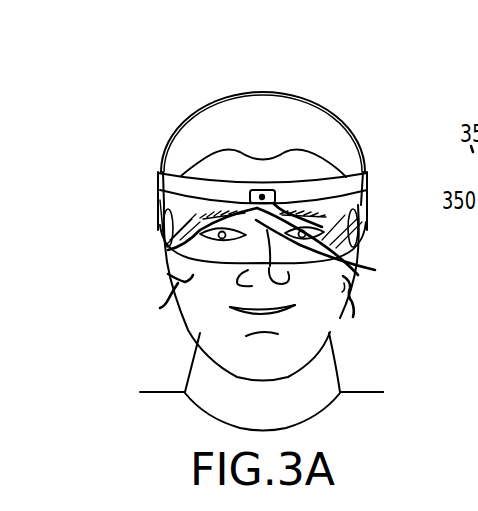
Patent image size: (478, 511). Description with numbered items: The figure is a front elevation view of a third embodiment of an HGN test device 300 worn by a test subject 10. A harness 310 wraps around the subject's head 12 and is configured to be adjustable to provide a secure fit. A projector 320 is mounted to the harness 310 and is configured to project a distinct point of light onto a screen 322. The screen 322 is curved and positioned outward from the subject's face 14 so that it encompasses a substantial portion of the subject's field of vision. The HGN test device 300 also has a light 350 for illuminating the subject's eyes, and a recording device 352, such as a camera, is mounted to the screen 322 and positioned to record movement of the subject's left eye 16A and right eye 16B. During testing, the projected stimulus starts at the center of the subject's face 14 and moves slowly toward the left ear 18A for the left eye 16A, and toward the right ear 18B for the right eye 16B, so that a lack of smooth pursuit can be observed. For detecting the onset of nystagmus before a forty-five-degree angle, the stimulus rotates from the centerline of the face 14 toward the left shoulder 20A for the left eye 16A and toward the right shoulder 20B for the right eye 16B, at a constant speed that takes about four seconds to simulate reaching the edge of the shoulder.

The HGN test device 300 is at (146, 108).
The test subject 10 is at (372, 122).
The head 12 is at (305, 116).
The face 14 is at (176, 298).
The harness 310 is at (174, 137).
The screen 322 is at (160, 200).
The projector 320 is at (358, 275).
The light 350 is at (276, 199).
The recording device 352 is at (322, 227).
The left eye 16A is at (375, 270).
The right eye 16B is at (168, 250).
The left ear 18A is at (360, 314).
The right ear 18B is at (168, 274).
The left shoulder 20A is at (380, 403).
The right shoulder 20B is at (145, 404).